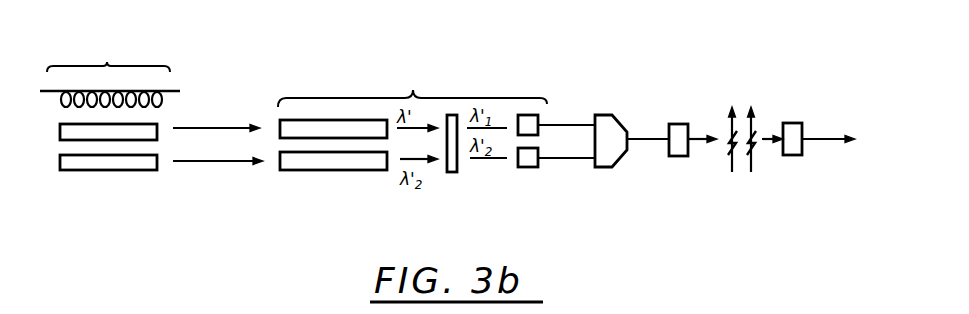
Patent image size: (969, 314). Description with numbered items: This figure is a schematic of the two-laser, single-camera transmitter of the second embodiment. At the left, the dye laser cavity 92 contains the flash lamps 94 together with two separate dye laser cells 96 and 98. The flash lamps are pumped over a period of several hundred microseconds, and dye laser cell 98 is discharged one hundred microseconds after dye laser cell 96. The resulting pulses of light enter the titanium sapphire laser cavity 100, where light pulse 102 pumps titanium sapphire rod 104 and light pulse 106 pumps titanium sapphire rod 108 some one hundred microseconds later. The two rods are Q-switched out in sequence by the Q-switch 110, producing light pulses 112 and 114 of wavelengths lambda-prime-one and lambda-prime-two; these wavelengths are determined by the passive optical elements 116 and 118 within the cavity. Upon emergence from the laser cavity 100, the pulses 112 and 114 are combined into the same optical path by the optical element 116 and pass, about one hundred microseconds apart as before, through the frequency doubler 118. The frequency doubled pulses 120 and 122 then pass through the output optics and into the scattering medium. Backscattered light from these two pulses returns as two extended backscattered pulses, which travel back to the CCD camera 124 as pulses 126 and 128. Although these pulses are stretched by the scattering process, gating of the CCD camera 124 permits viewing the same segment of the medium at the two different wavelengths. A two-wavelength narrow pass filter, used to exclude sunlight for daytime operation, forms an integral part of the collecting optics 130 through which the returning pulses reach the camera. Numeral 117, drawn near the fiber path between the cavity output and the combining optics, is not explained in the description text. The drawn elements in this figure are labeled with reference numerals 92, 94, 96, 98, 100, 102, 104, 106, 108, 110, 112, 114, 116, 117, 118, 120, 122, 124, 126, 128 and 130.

The dye laser cavity 92 is at (105, 67).
The flash lamps 94 is at (174, 89).
The dye laser cell 96 is at (60, 131).
The dye laser cell 98 is at (68, 170).
The titanium sapphire laser cavity 100 is at (412, 86).
The light pulse 102 is at (241, 127).
The titanium sapphire rod 104 is at (311, 120).
The light pulse 106 is at (237, 162).
The titanium sapphire rod 108 is at (298, 171).
The Q-switch 110 is at (455, 172).
The light pulse 112 is at (590, 117).
The light pulse 114 is at (542, 163).
The optical element 116 is at (602, 168).
The first fiber 117 is at (542, 121).
The frequency doubler 118 is at (530, 168).
The frequency doubled pulse 120 is at (707, 75).
The frequency doubled pulse 122 is at (751, 70).
The CCD camera 124 is at (868, 151).
The pulse 126 is at (838, 118).
The pulse 128 is at (813, 170).
The collecting optics 130 is at (790, 156).